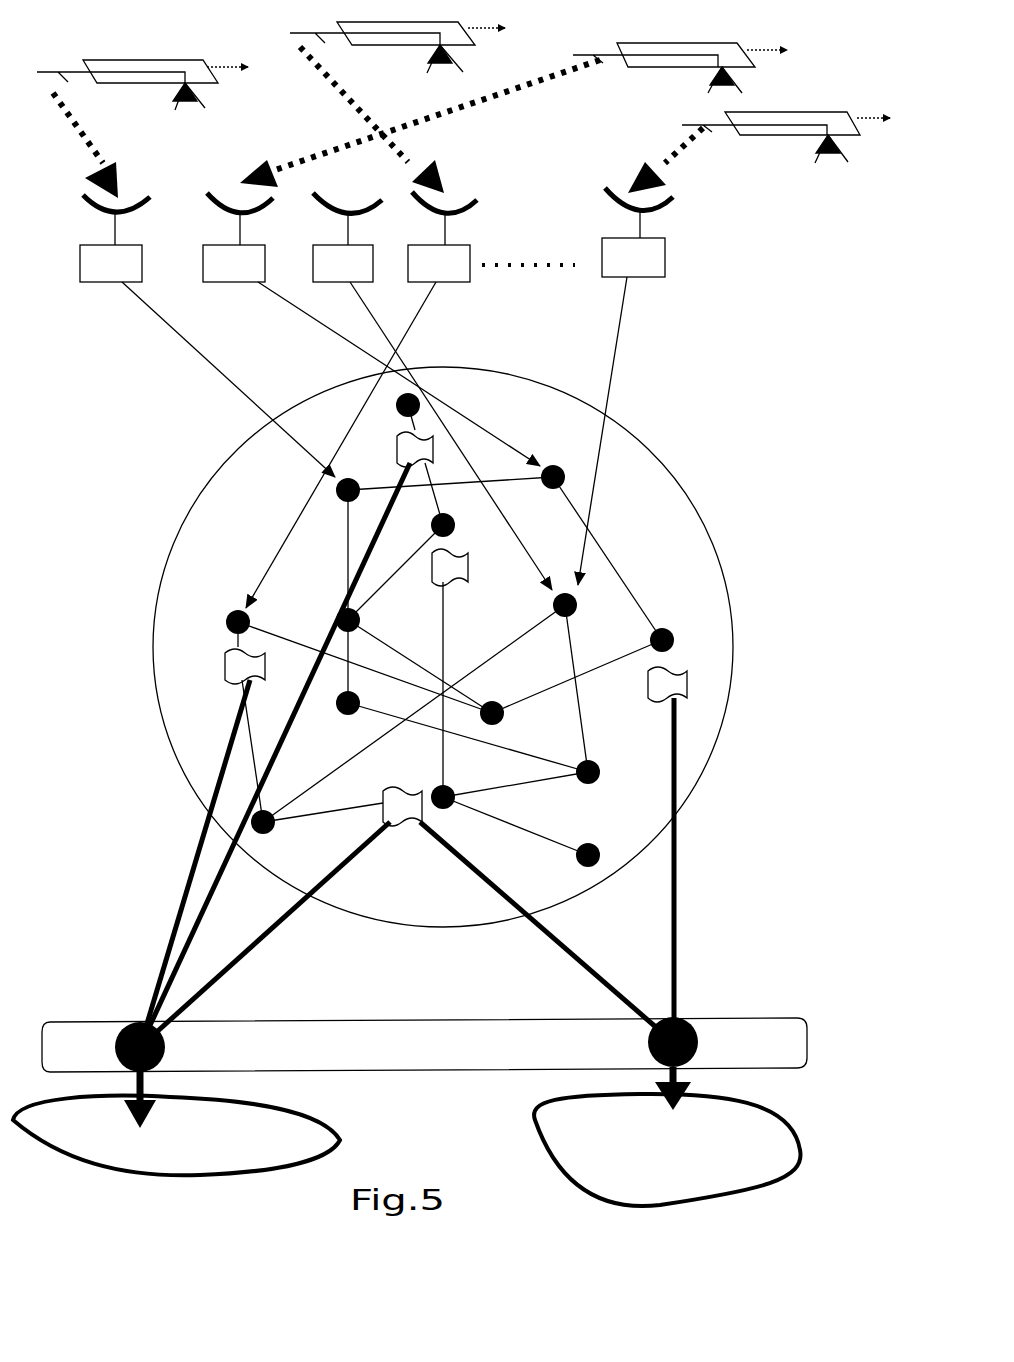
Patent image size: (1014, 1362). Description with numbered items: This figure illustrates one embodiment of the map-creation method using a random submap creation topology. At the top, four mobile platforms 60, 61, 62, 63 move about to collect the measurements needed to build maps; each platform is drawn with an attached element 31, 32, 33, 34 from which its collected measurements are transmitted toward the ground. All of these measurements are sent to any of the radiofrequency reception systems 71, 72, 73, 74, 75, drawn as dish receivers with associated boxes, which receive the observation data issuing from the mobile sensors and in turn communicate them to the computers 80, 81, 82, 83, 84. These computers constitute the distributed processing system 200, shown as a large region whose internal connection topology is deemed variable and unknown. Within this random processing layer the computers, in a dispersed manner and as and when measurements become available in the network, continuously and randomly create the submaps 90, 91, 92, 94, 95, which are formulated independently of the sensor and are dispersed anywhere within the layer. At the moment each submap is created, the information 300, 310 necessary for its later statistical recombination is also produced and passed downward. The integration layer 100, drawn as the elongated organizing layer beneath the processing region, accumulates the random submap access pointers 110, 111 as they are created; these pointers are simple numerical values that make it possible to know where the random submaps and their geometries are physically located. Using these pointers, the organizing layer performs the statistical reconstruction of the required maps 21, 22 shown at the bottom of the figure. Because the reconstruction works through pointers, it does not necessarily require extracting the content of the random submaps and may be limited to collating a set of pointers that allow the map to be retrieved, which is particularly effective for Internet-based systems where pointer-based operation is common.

The mobile platform 60 is at (150, 58).
The mobile platform 61 is at (367, 22).
The mobile platform 62 is at (692, 42).
The mobile platform 63 is at (810, 112).
The satellite antenna 31 is at (198, 92).
The satellite antenna 32 is at (440, 55).
The satellite antenna 33 is at (712, 78).
The satellite antenna 34 is at (845, 150).
The radiofrequency reception system 71 is at (110, 246).
The radiofrequency reception system 72 is at (230, 246).
The radiofrequency reception system 73 is at (335, 246).
The radiofrequency reception system 74 is at (438, 252).
The radiofrequency reception system 75 is at (655, 262).
The distributed processing system 200 is at (680, 485).
The computer 80 is at (672, 632).
The computer 81 is at (582, 600).
The computer 82 is at (228, 610).
The computer 83 is at (267, 836).
The computer 84 is at (588, 785).
The random submap 90 is at (687, 680).
The random submap 91 is at (470, 563).
The random submap 92 is at (433, 438).
The random submap 94 is at (407, 822).
The random submap 95 is at (225, 672).
The integration layer 100 is at (53, 1050).
The access pointer 110 is at (165, 1048).
The access pointer 111 is at (647, 1052).
The recombination information 300 is at (677, 910).
The recombination information 310 is at (597, 983).
The map 21 is at (163, 1160).
The map 22 is at (612, 1170).